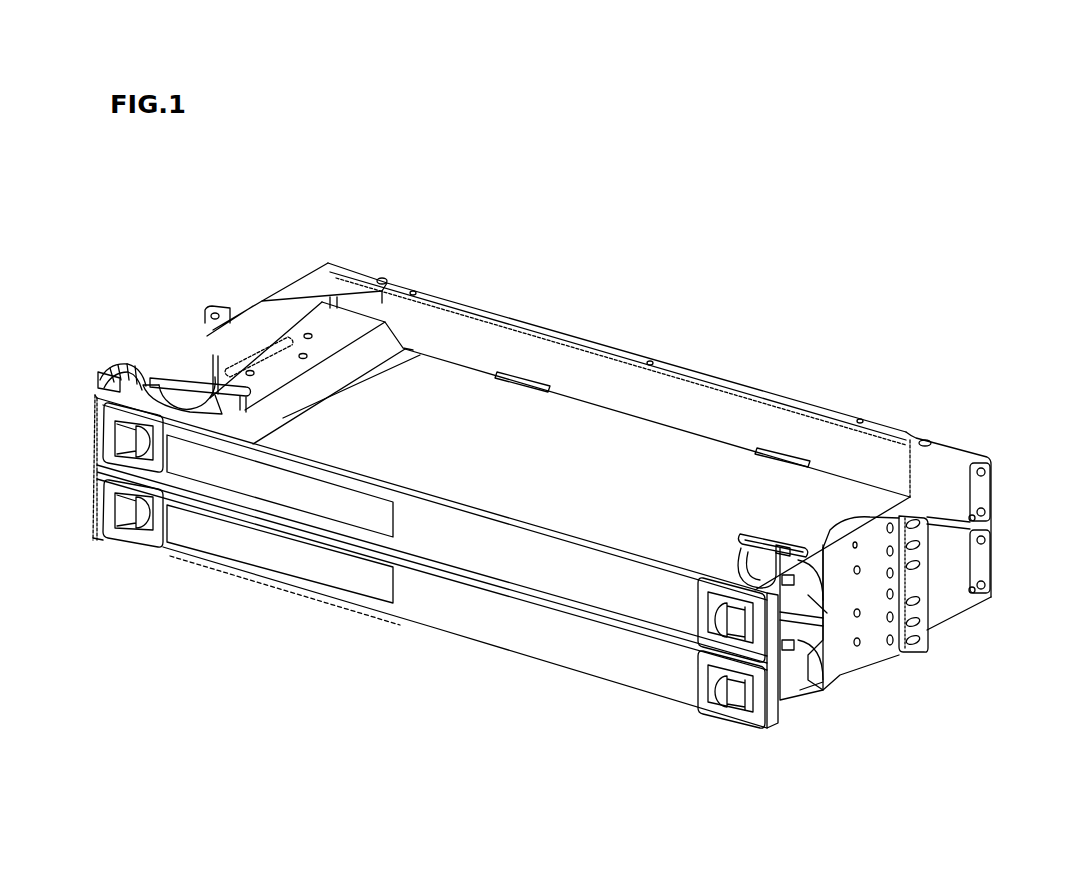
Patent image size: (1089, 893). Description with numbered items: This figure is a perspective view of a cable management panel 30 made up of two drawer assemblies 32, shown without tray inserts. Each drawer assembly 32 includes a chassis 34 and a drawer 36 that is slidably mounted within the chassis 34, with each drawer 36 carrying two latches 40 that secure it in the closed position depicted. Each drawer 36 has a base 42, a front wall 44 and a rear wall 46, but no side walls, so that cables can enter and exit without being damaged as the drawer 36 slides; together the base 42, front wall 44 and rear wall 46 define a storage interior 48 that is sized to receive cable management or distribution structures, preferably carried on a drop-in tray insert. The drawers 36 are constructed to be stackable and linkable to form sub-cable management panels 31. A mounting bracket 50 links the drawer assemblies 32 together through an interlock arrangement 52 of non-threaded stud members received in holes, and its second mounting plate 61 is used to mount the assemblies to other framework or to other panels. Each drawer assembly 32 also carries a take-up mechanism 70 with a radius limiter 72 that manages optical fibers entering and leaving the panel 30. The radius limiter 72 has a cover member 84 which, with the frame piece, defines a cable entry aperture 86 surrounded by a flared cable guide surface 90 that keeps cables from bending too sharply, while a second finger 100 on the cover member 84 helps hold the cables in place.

The cable management panel 30 is at (812, 258).
The sub-cable management panel 31 is at (935, 425).
The drawer assembly 32 is at (1000, 418).
The chassis 34 is at (976, 563).
The drawer 36 is at (443, 630).
The latch 40 is at (135, 523).
The base 42 is at (455, 380).
The front wall 44 is at (568, 555).
The rear wall 46 is at (727, 407).
The storage interior 48 is at (410, 384).
The bracket 50 is at (884, 686).
The interlock arrangement 52 is at (882, 616).
The second mounting plate 61 is at (925, 633).
The take-up mechanism 70 is at (151, 333).
The radius limiter 72 is at (766, 533).
The cover member 84 is at (100, 378).
The cable entry aperture 86 is at (800, 688).
The flared cable guide surface 90 is at (114, 370).
The second finger 100 is at (777, 546).